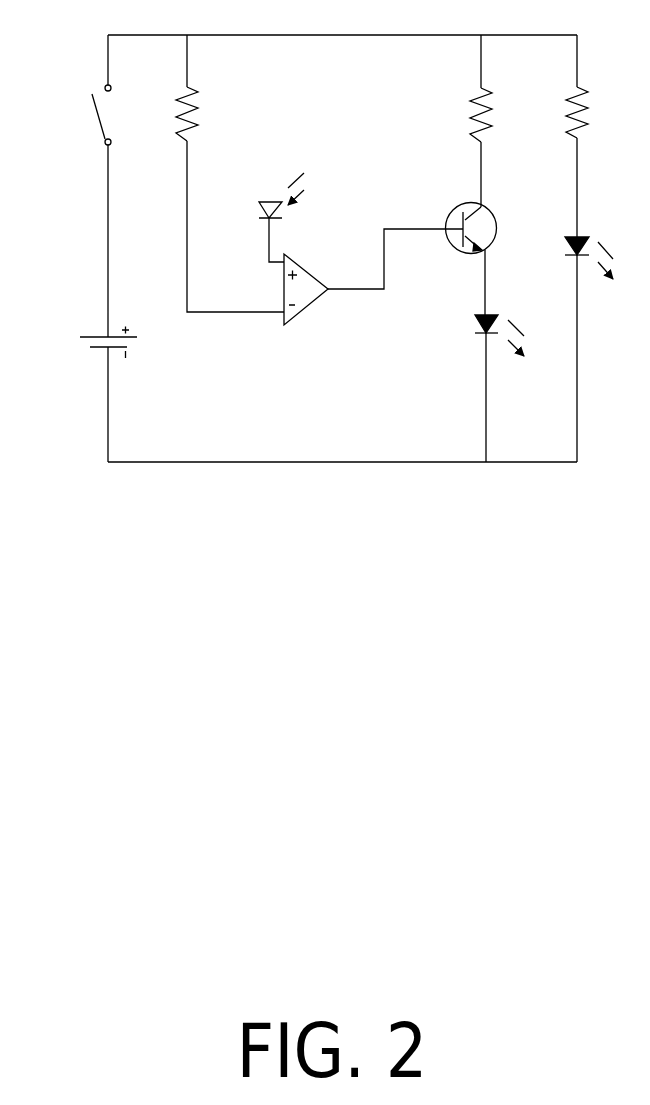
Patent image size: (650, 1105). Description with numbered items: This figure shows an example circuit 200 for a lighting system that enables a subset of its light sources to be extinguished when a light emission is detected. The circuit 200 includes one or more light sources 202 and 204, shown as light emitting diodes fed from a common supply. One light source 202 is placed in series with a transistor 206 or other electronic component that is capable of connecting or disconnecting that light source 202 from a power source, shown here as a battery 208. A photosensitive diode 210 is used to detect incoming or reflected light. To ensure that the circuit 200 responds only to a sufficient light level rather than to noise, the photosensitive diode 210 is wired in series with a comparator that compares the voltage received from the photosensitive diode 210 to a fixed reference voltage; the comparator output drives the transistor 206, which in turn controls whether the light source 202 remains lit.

The circuit 200 is at (492, 537).
The light source 202 is at (478, 315).
The light source 204 is at (566, 237).
The transistor 206 is at (448, 214).
The battery 208 is at (80, 337).
The photosensitive diode 210 is at (258, 202).